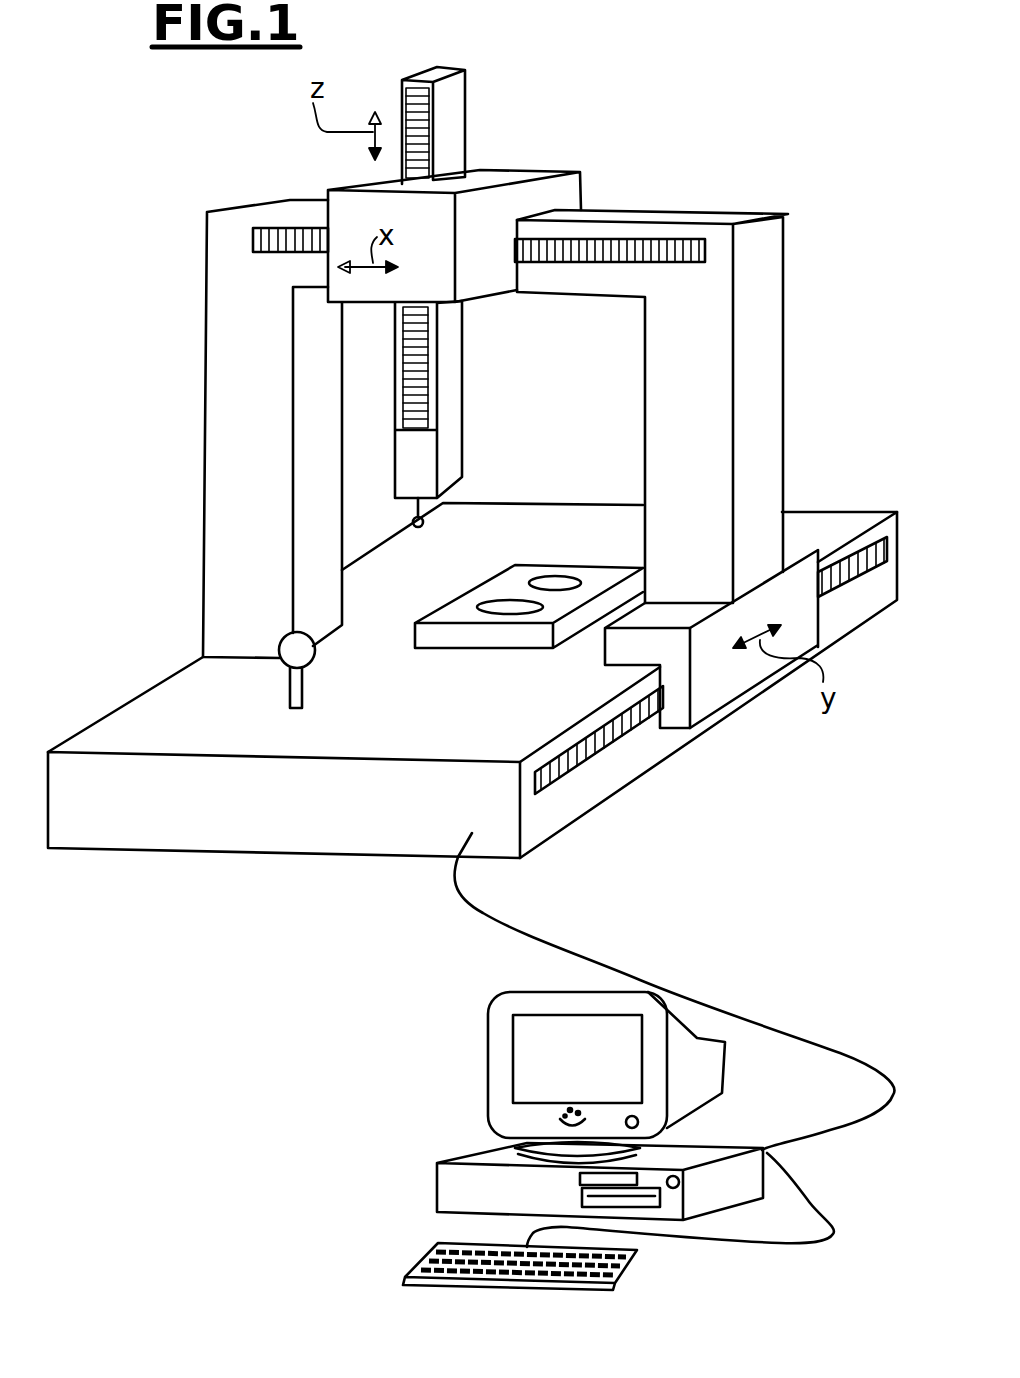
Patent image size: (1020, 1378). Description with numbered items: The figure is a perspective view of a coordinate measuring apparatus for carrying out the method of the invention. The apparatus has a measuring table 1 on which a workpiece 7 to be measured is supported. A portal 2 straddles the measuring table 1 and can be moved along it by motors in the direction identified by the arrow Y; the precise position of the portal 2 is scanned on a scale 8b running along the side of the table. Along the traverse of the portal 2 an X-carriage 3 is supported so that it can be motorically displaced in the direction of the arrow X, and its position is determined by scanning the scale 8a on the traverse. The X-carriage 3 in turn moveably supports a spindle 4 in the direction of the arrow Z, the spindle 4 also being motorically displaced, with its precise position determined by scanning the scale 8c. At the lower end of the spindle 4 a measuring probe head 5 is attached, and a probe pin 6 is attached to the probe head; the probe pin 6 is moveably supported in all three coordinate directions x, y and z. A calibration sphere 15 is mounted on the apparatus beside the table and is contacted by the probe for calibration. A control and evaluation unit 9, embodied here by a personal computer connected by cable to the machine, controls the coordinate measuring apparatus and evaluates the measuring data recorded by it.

The measuring table 1 is at (820, 524).
The portal 2 is at (760, 337).
The X-carriage 3 is at (503, 167).
The spindle 4 is at (455, 96).
The measuring probe head 5 is at (443, 453).
The probe pin 6 is at (425, 500).
The workpiece 7 is at (513, 640).
The scale 8a is at (678, 240).
The scale 8b is at (873, 537).
The scale 8c is at (427, 358).
The control and evaluation unit 9 is at (443, 1090).
The calibration sphere 15 is at (314, 646).